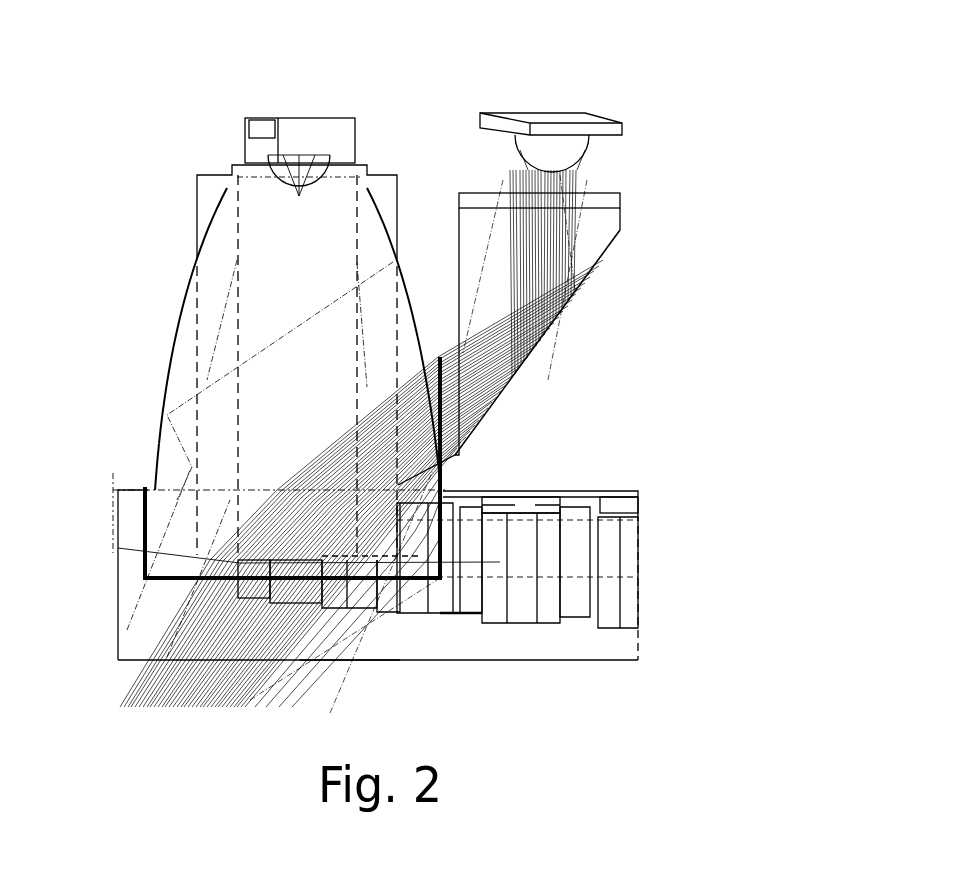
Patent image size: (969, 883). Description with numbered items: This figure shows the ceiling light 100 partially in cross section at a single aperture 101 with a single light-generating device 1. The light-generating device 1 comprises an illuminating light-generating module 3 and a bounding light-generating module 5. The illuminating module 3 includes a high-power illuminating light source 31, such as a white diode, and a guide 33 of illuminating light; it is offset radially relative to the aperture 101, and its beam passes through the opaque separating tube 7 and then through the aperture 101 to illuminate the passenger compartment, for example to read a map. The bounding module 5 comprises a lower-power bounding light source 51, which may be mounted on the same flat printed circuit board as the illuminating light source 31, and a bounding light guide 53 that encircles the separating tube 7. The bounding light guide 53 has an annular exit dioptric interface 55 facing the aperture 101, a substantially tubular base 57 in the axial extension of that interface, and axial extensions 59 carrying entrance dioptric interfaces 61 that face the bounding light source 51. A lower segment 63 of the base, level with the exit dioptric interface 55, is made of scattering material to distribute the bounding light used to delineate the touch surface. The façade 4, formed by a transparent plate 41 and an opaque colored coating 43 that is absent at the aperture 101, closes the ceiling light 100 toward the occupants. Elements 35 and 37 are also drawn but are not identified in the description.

The ceiling light 100 is at (772, 191).
The light-generating device 1 is at (735, 157).
The illuminating light-generating module 3 is at (650, 162).
The façade 4 is at (757, 555).
The bounding light-generating module 5 is at (393, 165).
The separating tube 7 is at (208, 173).
The illuminating light source 31 is at (548, 110).
The guide of illuminating light 33 is at (640, 220).
The lens holder 35 is at (493, 195).
The light shield 37 is at (440, 355).
The plate 41 is at (640, 609).
The opaque layer or coating 43 is at (640, 540).
The bounding light source 51 is at (260, 117).
The bounding light guide 53 is at (178, 384).
The exit dioptric interface 55 is at (233, 610).
The base 57 is at (158, 466).
The axial extensions 59 is at (213, 227).
The entrance dioptric interfaces 61 is at (358, 160).
The lower segment 63 is at (113, 500).
The aperture 101 is at (347, 664).